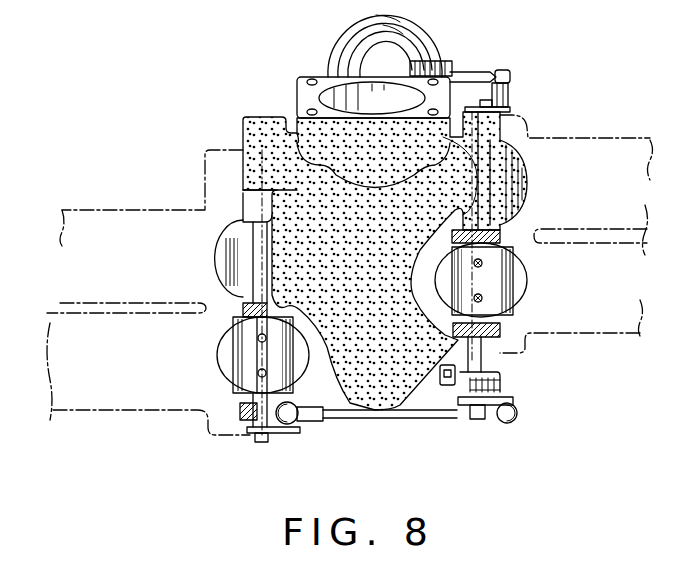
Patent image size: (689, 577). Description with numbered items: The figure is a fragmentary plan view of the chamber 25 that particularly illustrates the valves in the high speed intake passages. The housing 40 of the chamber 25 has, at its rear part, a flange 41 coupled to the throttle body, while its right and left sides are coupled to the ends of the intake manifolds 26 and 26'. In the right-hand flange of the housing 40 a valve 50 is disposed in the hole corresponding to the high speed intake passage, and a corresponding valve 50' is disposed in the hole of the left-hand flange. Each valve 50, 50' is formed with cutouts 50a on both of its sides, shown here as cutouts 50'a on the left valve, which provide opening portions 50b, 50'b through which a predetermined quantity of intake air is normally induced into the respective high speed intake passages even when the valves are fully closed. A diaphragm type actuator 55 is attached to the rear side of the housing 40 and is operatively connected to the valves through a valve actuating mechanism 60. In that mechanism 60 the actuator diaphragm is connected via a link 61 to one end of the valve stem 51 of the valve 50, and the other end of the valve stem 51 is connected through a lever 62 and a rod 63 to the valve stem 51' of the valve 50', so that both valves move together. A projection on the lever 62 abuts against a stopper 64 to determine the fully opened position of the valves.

The chamber 25 is at (293, 104).
The intake manifold 26 is at (576, 252).
The intake manifold 26' is at (148, 310).
The housing 40 is at (396, 253).
The flange 41 is at (318, 76).
The valve 50 is at (503, 301).
The cutout 50a is at (453, 232).
The opening portion 50b is at (464, 197).
The valve 50' is at (237, 292).
The bearing portion 50'a is at (327, 281).
The bearing portion 50'b is at (196, 287).
The valve stem 51 is at (523, 288).
The valve stem 51' is at (216, 366).
The diaphragm type actuator 55 is at (405, 35).
The valve actuating mechanism 60 is at (398, 424).
The link 61 is at (468, 75).
The lever 62 is at (510, 397).
The rod 63 is at (352, 420).
The stopper 64 is at (441, 376).